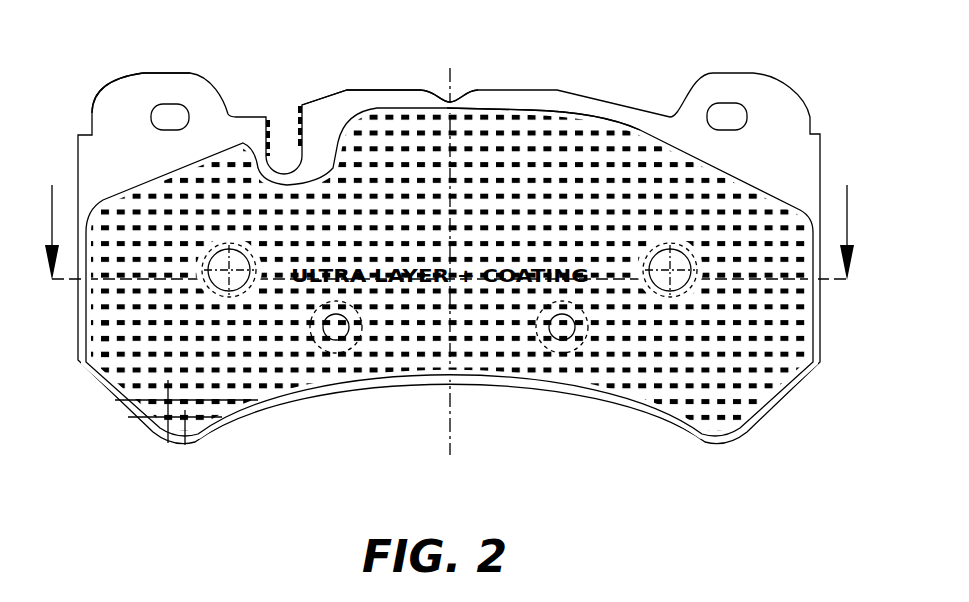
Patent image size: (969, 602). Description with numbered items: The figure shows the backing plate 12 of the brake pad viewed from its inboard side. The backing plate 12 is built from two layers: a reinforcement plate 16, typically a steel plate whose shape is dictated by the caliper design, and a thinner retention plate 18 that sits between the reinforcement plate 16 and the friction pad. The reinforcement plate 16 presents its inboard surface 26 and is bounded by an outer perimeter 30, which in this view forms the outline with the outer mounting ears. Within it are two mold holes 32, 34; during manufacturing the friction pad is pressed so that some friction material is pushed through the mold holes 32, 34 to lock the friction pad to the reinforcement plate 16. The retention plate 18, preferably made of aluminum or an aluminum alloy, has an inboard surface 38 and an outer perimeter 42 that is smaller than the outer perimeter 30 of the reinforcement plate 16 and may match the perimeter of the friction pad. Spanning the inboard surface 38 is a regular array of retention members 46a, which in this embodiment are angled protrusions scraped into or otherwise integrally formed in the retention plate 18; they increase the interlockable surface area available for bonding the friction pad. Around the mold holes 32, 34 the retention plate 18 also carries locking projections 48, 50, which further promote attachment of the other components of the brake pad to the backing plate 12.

The backing plate 12 is at (637, 66).
The reinforcement plate 16 is at (197, 87).
The retention plate 18 is at (242, 153).
The inboard surface 26 is at (148, 93).
The outer perimeter 30 is at (355, 88).
The mold hole 32 is at (220, 283).
The mold hole 34 is at (665, 283).
The inboard surface 38 is at (427, 120).
The outer perimeter 42 is at (482, 110).
The retention members 46a is at (100, 323).
The locking projection 48 is at (248, 283).
The locking projection 50 is at (684, 283).